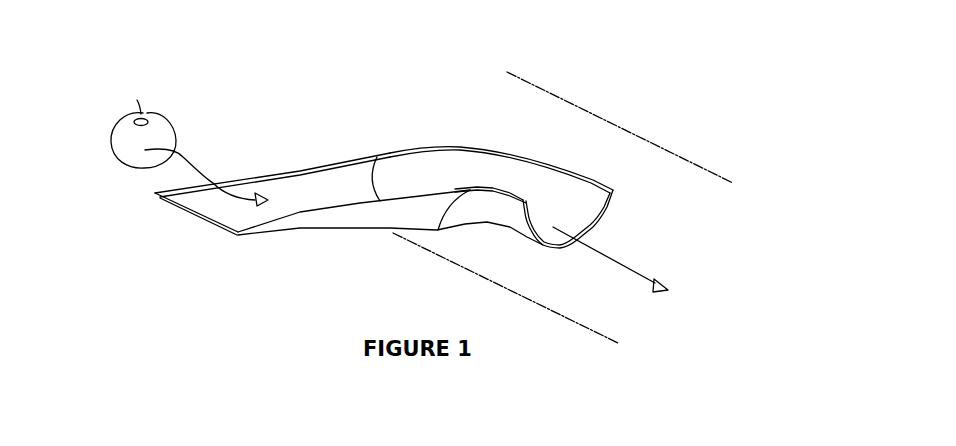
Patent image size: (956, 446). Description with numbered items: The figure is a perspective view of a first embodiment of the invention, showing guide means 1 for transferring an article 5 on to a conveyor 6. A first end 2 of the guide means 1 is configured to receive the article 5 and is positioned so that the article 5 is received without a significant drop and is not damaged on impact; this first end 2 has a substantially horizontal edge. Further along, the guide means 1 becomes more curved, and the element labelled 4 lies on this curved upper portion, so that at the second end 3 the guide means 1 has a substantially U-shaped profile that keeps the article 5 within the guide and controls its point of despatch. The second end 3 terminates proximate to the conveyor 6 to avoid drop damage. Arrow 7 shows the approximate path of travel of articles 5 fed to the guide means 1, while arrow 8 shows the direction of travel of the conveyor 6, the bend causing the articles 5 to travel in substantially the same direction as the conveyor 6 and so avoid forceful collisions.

The guide means 1 is at (318, 93).
The first end 2 is at (169, 232).
The second end 3 is at (633, 159).
The upper wall surface 4 is at (451, 124).
The article 5 is at (101, 103).
The conveyor 6 is at (693, 206).
The arrow 7 is at (203, 168).
The arrow 8 is at (613, 260).